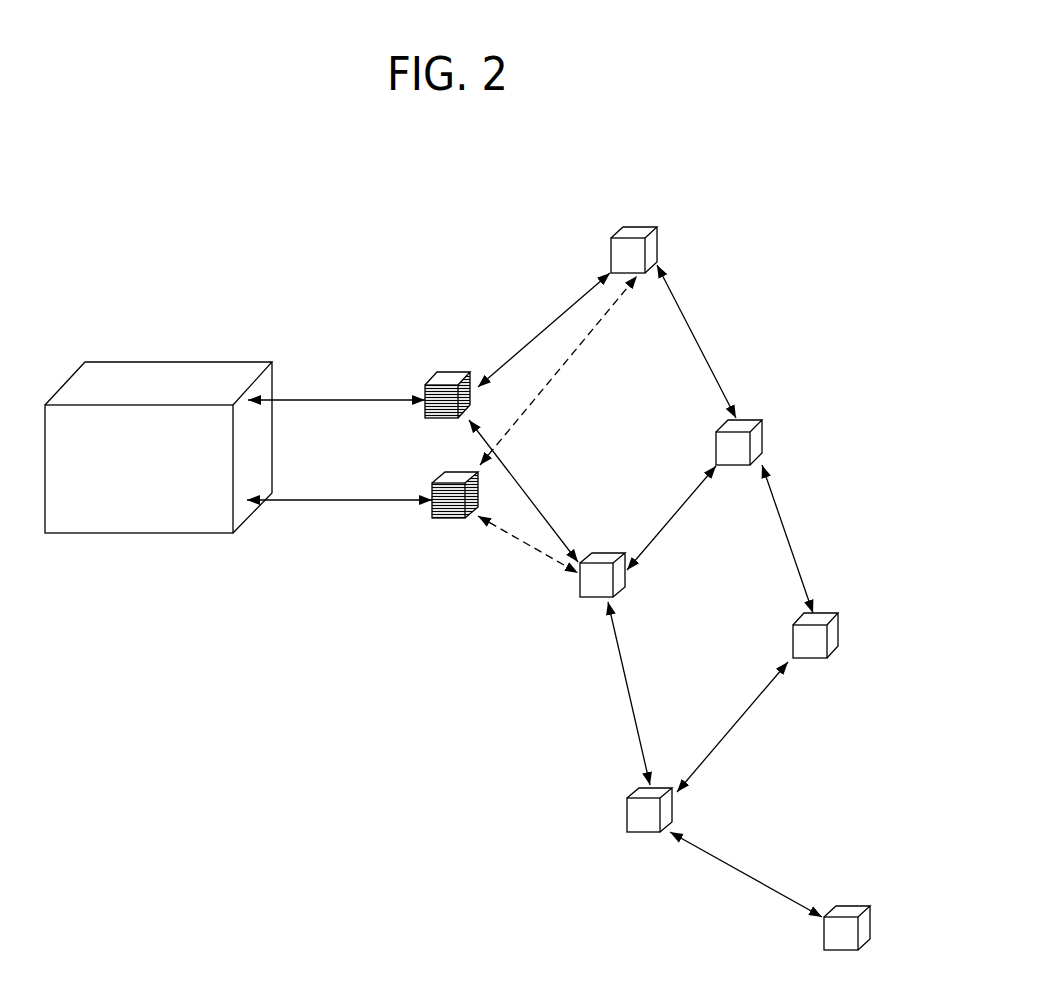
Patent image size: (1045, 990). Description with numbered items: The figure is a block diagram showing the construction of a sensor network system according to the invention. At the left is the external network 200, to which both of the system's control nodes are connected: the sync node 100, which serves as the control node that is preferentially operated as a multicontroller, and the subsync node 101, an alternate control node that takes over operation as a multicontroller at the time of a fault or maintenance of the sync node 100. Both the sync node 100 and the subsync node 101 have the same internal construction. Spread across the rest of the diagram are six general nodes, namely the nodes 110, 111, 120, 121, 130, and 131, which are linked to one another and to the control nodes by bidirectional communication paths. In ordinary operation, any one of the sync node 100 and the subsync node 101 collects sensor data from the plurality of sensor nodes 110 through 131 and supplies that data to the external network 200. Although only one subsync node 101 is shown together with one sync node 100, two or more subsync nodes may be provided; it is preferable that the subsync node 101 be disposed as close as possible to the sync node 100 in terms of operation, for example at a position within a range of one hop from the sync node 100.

The external network 200 is at (186, 362).
The sync node 100 is at (450, 372).
The subsync node 101 is at (445, 520).
The node 110 is at (630, 228).
The node 111 is at (592, 599).
The node 120 is at (716, 437).
The node 121 is at (644, 834).
The node 130 is at (822, 614).
The node 131 is at (844, 906).